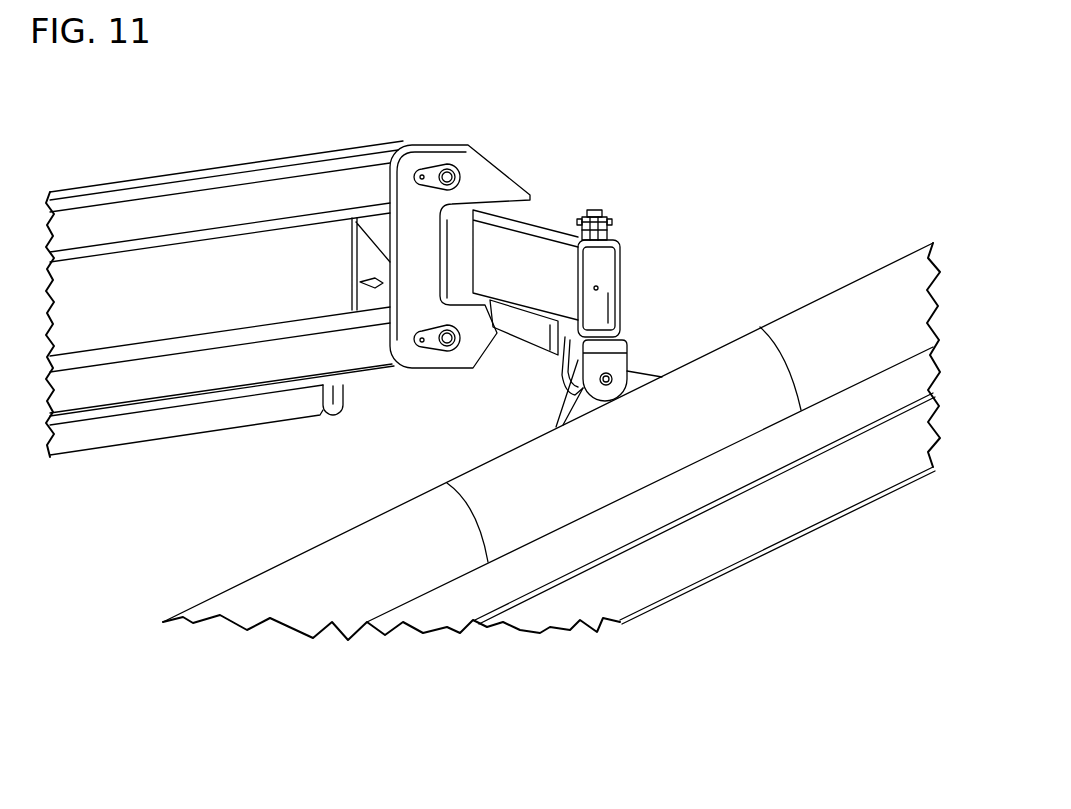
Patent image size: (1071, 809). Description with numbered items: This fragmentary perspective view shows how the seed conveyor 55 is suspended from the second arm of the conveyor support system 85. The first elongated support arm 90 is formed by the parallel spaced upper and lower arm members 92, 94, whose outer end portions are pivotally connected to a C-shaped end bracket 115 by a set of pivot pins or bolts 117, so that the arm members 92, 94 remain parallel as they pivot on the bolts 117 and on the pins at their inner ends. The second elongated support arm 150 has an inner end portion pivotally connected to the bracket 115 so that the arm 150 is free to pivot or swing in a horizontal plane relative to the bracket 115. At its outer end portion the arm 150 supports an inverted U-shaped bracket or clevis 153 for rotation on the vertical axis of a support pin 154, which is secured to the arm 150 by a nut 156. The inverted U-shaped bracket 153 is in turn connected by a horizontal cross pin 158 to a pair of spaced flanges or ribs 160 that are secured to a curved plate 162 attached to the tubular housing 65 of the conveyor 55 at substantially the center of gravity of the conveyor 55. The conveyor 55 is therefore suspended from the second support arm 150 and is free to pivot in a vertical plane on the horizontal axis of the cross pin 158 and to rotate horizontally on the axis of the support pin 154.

The seed conveyor 55 is at (547, 608).
The tubular conveyor housing 65 is at (368, 555).
The conveyor support system 85 is at (217, 440).
The first elongated support arm 90 is at (207, 160).
The upper arm member 92 is at (264, 199).
The lower arm member 94 is at (275, 363).
The C-shaped end bracket 115 is at (478, 177).
The pivot bolts 117 is at (448, 170).
The second elongated support arm 150 is at (548, 215).
The inverted U-shaped bracket 153 is at (628, 354).
The support pin 154 is at (596, 212).
The nut 156 is at (606, 228).
The horizontal cross pin 158 is at (607, 386).
The spaced flanges 160 is at (581, 410).
The curved plate 162 is at (703, 370).